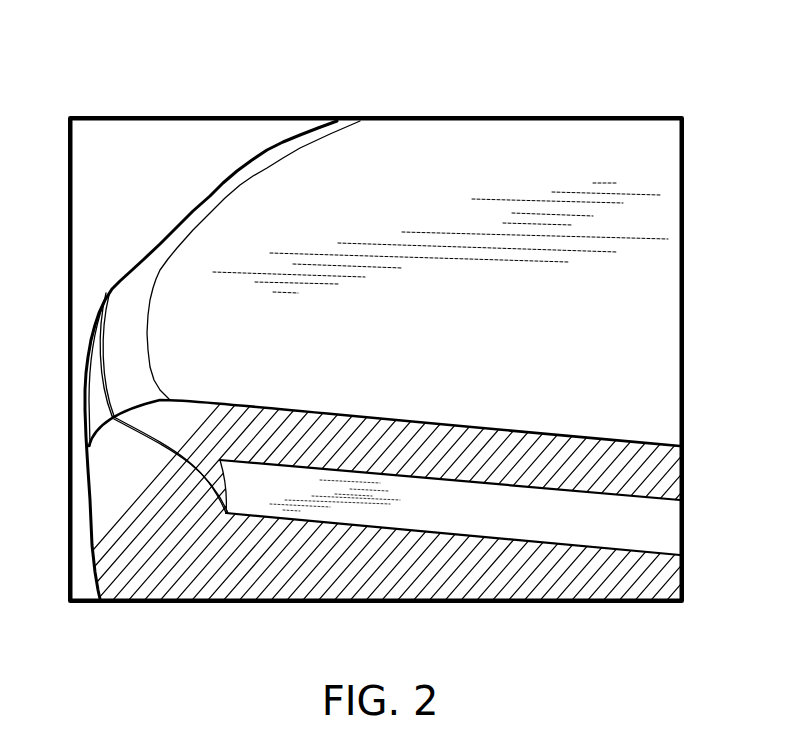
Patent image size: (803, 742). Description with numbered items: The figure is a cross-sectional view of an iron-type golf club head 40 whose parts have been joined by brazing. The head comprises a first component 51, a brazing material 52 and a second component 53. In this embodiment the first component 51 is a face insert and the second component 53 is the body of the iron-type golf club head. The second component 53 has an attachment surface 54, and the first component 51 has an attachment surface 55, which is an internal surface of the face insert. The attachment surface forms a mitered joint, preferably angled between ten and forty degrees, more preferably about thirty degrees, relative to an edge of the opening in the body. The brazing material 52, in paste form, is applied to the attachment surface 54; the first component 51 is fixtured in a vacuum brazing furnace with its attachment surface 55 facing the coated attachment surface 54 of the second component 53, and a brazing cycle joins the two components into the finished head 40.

The iron-type golf club head 40 is at (584, 90).
The first component 51 is at (660, 383).
The brazing material 52 is at (103, 350).
The second component 53 is at (86, 449).
The attachment surface 54 is at (109, 399).
The attachment surface 55 is at (106, 335).